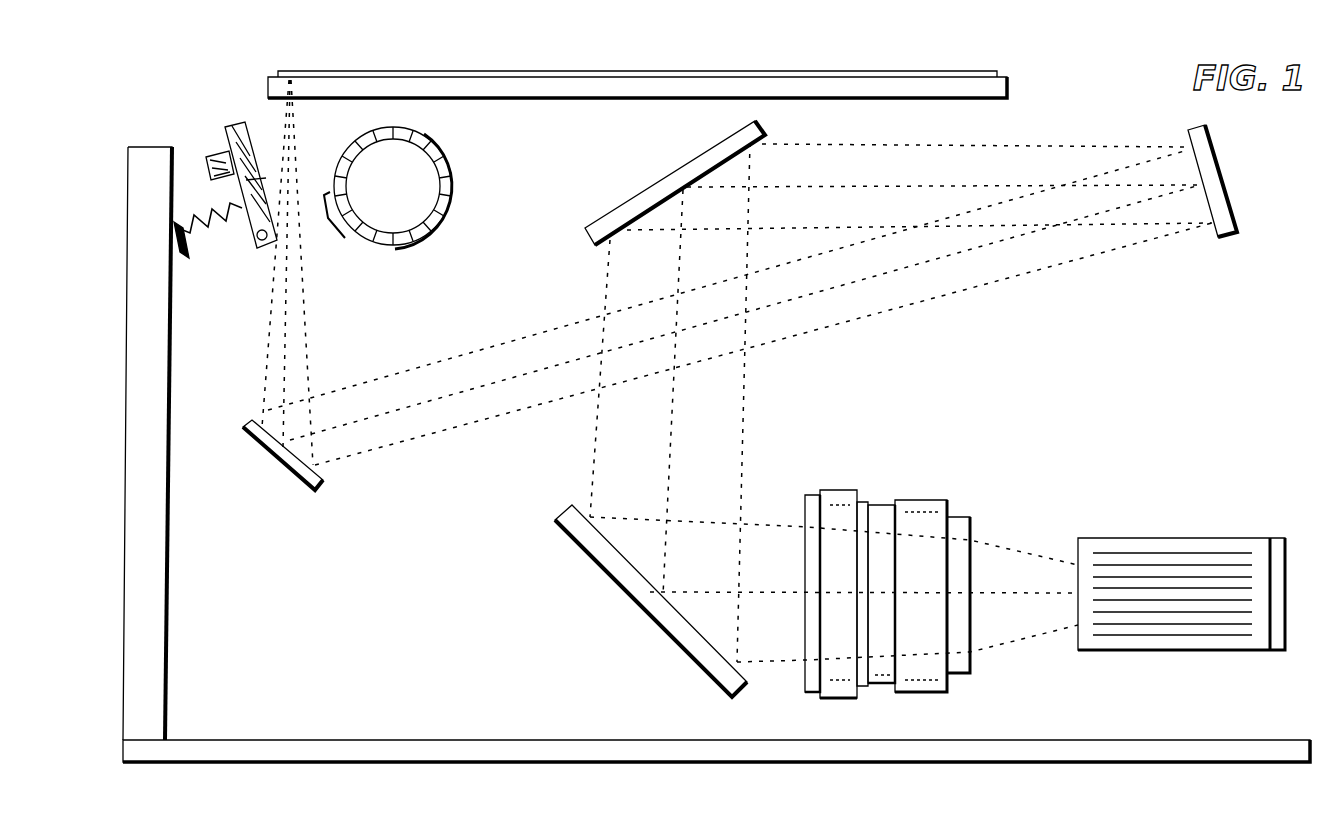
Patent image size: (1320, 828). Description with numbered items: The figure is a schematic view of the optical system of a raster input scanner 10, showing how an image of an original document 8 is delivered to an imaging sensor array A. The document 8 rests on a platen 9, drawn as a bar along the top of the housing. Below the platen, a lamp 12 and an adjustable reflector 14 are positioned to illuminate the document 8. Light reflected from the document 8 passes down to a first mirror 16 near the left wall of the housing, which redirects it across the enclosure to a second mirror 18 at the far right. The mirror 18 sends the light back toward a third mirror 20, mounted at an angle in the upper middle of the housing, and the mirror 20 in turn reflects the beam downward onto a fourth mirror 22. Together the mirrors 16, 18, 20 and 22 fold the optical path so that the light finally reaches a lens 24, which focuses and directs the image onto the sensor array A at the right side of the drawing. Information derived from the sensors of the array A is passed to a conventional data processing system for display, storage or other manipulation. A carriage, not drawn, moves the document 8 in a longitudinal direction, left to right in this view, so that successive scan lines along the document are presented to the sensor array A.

The raster input scanner 10 is at (233, 90).
The original document 8 is at (913, 70).
The platen 9 is at (930, 92).
The lamp 12 is at (377, 127).
The adjustable reflector 14 is at (247, 237).
The mirror 16 is at (268, 450).
The mirror 18 is at (1220, 173).
The mirror 20 is at (673, 170).
The mirror 22 is at (628, 587).
The lens 24 is at (835, 500).
The imaging sensor array A is at (1117, 537).